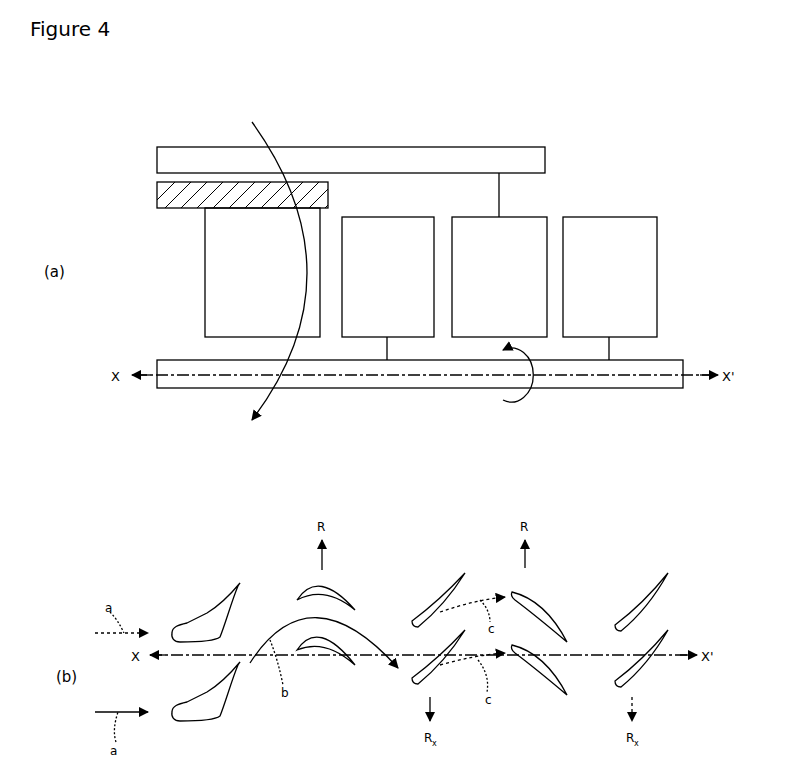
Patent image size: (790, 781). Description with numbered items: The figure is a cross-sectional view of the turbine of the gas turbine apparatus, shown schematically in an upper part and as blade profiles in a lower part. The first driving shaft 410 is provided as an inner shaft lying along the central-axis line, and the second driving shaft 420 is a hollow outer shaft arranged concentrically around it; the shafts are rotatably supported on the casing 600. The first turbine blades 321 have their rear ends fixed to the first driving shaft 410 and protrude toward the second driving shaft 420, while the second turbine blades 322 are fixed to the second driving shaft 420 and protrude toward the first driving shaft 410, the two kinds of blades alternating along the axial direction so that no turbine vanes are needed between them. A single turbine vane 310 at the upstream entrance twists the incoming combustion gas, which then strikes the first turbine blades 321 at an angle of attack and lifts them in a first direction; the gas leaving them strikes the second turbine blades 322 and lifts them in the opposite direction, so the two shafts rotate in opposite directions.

The turbine vane 310 is at (205, 272).
The first turbine blade 321 is at (365, 217).
The second turbine blade 322 is at (528, 217).
The first driving shaft 410 is at (415, 388).
The second driving shaft 420 is at (512, 147).
The casing 600 is at (157, 195).